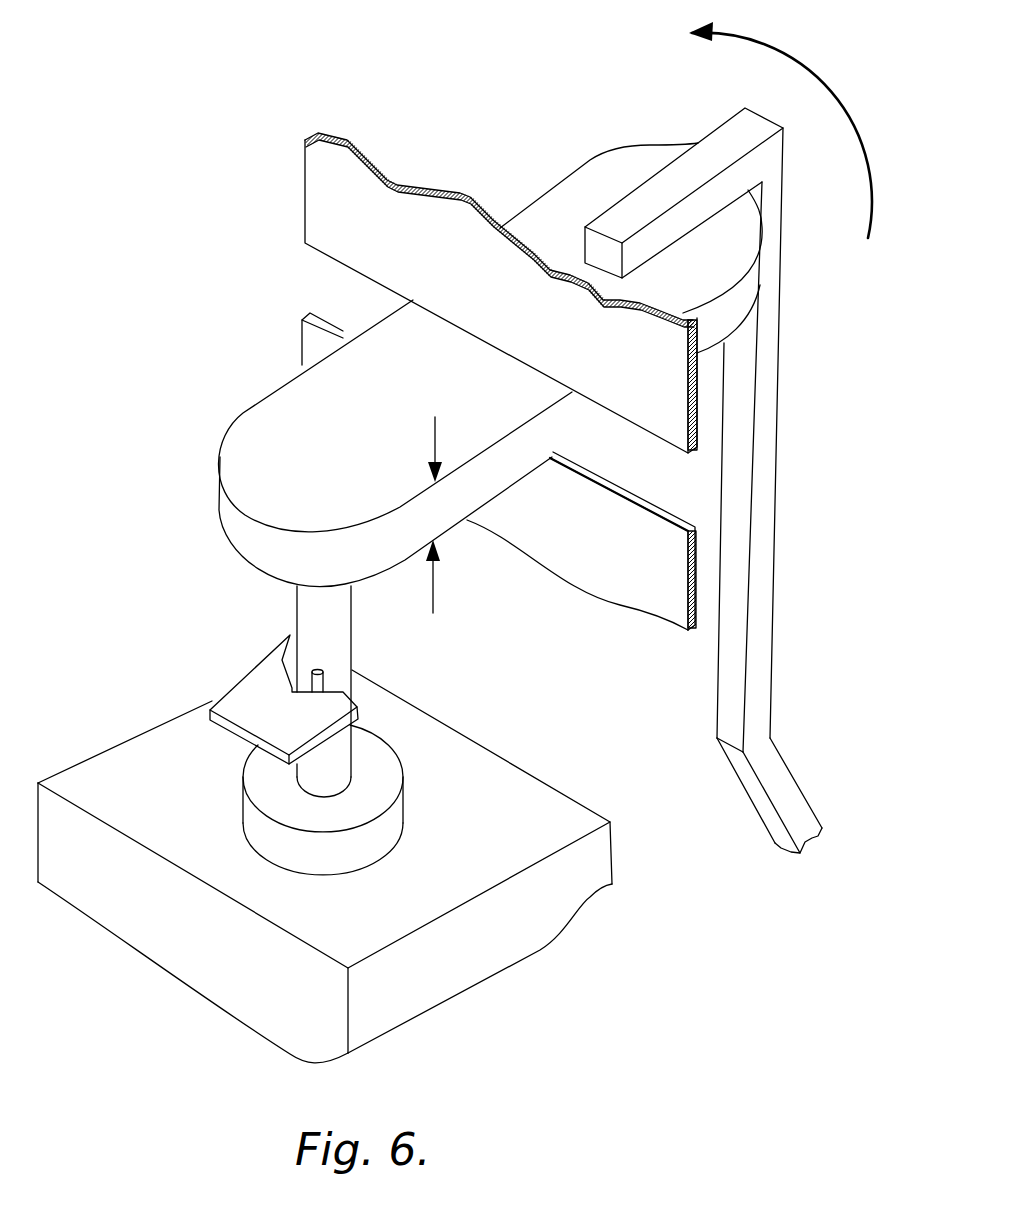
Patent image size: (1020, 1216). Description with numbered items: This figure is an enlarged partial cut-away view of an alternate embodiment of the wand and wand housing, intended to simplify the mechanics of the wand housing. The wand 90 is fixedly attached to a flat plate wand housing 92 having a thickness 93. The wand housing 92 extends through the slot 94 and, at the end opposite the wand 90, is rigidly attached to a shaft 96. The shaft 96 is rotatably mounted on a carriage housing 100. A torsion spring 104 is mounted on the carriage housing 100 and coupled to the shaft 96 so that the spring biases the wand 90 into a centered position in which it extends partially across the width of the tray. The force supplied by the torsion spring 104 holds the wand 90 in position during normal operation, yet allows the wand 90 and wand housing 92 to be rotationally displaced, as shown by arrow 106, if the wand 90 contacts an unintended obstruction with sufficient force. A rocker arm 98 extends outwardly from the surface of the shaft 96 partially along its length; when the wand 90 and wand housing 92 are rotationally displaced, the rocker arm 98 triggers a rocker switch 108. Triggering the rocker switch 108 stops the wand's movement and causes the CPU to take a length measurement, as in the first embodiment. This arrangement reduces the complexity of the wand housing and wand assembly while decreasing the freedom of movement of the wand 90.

The wand 90 is at (775, 455).
The flat plate wand housing 92 is at (580, 186).
The thickness 93 is at (434, 600).
The slot 94 is at (335, 288).
The shaft 96 is at (300, 612).
The rocker arm 98 is at (323, 670).
The carriage housing 100 is at (185, 958).
The torsion spring 104 is at (393, 818).
The arrow 106 is at (820, 80).
The rocker switch 108 is at (224, 696).